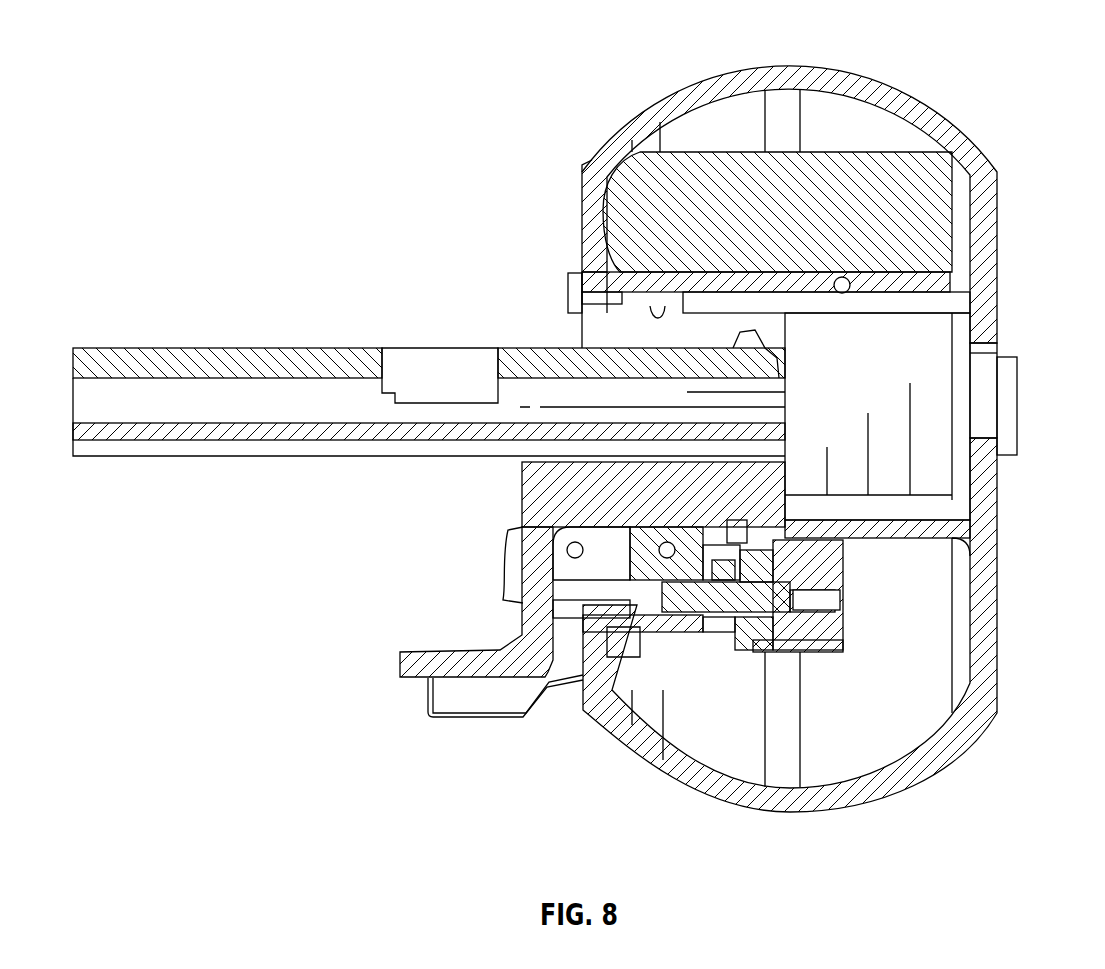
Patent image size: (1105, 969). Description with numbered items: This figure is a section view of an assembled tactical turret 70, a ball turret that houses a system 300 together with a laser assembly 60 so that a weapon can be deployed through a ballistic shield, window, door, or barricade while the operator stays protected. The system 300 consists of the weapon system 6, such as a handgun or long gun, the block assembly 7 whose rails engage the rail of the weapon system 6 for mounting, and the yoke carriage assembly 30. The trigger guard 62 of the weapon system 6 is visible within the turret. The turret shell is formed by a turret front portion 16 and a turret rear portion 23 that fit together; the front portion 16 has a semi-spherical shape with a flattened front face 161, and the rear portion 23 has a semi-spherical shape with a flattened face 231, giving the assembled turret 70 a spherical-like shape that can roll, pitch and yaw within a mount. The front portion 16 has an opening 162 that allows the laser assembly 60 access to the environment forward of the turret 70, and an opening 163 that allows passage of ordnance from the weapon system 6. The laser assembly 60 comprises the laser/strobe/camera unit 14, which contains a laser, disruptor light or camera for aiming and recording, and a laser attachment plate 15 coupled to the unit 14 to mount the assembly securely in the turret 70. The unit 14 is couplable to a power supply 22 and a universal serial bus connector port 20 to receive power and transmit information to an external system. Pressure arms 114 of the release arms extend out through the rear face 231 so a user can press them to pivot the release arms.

The weapon system 6 is at (180, 340).
The block assembly 7 is at (832, 670).
The laser/strobe/camera unit 14 is at (890, 188).
The laser attachment plate 15 is at (812, 283).
The turret front portion 16 is at (867, 77).
The universal serial bus connector port 20 is at (568, 285).
The power supply 22 is at (660, 317).
The turret rear portion 23 is at (712, 75).
The yoke carriage assembly 30 is at (455, 515).
The laser assembly 60 is at (893, 132).
The trigger guard 62 is at (415, 650).
The tactical turret 70 is at (978, 83).
The pressure arms 114 is at (482, 724).
The flattened front face 161 is at (997, 292).
The opening 162 is at (997, 222).
The opening 163 is at (985, 390).
The flattened face 231 is at (580, 172).
The system 300 is at (538, 212).